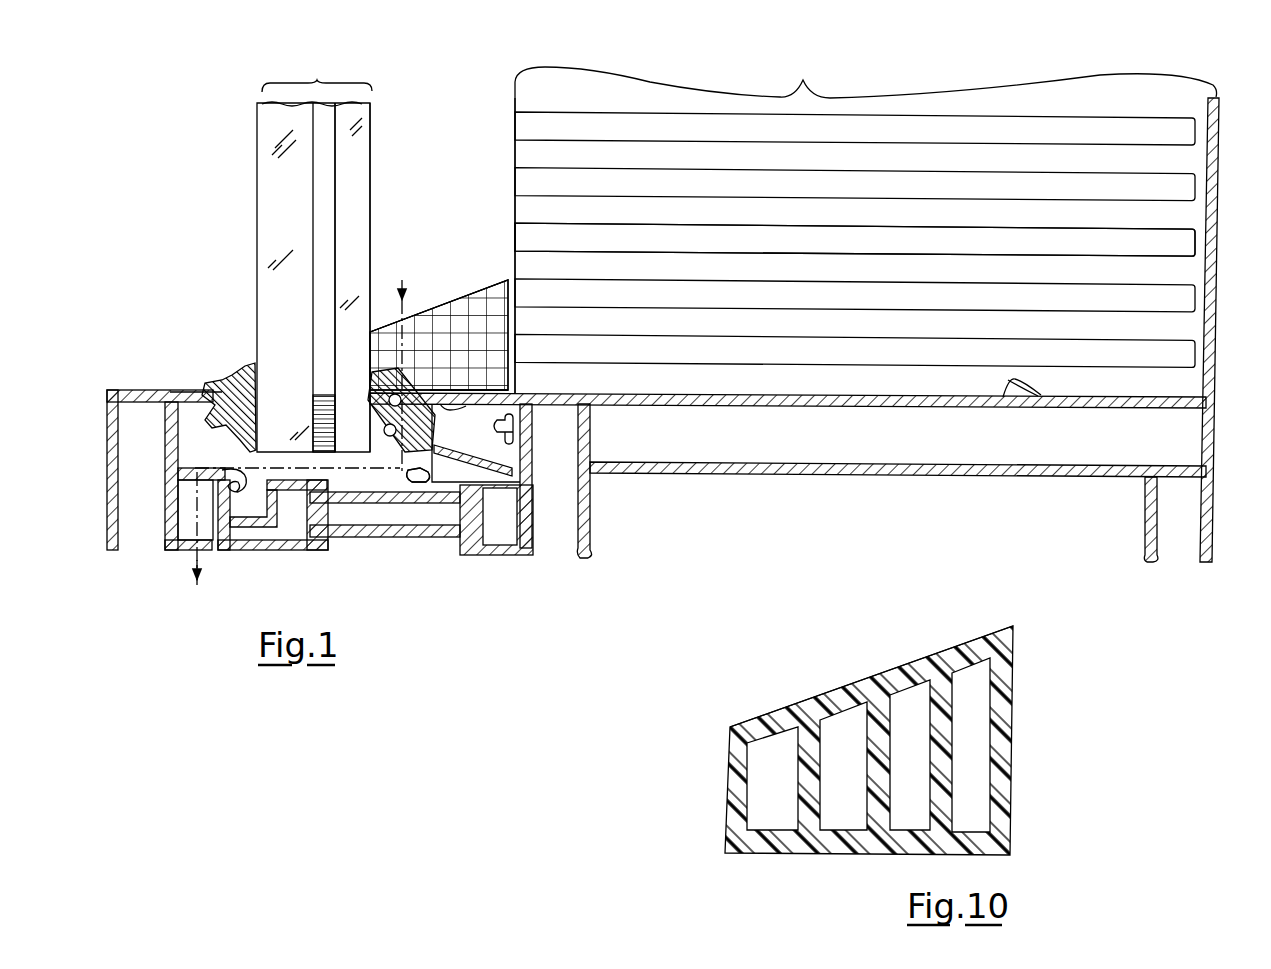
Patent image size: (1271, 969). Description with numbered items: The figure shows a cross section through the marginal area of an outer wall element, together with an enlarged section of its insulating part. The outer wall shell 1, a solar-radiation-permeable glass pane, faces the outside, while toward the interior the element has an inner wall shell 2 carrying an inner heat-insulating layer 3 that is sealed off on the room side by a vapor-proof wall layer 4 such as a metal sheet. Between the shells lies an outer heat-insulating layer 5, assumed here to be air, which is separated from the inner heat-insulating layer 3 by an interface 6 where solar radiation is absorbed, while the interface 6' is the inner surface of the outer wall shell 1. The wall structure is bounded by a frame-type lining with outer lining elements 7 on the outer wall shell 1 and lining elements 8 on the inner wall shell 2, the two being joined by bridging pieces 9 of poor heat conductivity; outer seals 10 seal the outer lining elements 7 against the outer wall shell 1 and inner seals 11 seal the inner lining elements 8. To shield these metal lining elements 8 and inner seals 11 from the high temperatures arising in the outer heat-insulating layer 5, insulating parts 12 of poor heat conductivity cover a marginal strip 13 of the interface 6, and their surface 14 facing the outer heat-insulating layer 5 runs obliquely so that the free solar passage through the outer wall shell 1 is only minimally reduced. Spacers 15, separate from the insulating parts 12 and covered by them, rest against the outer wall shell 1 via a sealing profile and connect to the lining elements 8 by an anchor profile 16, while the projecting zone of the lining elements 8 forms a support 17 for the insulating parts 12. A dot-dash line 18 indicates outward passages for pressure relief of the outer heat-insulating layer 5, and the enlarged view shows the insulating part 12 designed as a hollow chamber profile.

In FIG. 1, the outer wall shell 1 is at (314, 250).
In FIG. 1, the inner wall shell 2 is at (866, 222).
In FIG. 1, the inner heat-insulating layer 3 is at (815, 269).
In FIG. 1, the wall layer 4 is at (1218, 262).
In FIG. 1, the outer heat-insulating layer 5 is at (451, 220).
In FIG. 1, the interface 6 is at (486, 245).
In FIG. 1, the inner surface of the outer wall shell 6' is at (389, 277).
In FIG. 1, the outer lining element 7 is at (133, 563).
In FIG. 1, the lining element 8 is at (767, 480).
In FIG. 1, the bridging piece 9 is at (432, 485).
In FIG. 1, the outer seal 10 is at (227, 374).
In FIG. 1, the inner seal 11 is at (362, 470).
In FIG. 1, the insulating part 12 is at (478, 304).
In FIG. 10, the insulating part 12 is at (876, 840).
In FIG. 1, the marginal strip 13 is at (508, 326).
In FIG. 10, the marginal strip 13 is at (1014, 742).
In FIG. 1, the surface of the insulating parts 14 is at (436, 300).
In FIG. 10, the surface of the insulating parts 14 is at (877, 678).
In FIG. 1, the spacer 15 is at (440, 480).
In FIG. 1, the anchor profile 16 is at (423, 413).
In FIG. 1, the support 17 is at (480, 389).
In FIG. 1, the dot-dash line 18 is at (401, 302).